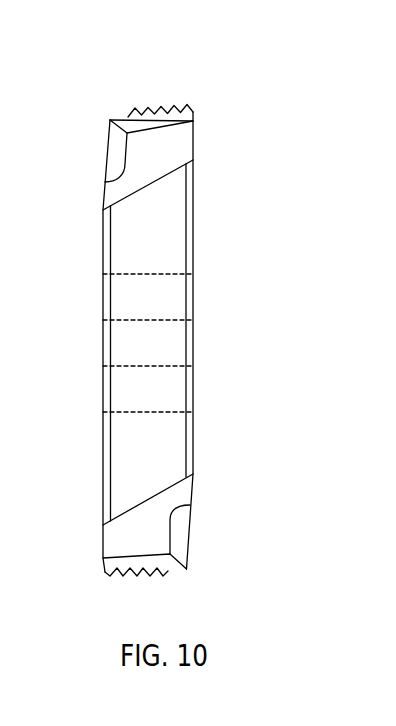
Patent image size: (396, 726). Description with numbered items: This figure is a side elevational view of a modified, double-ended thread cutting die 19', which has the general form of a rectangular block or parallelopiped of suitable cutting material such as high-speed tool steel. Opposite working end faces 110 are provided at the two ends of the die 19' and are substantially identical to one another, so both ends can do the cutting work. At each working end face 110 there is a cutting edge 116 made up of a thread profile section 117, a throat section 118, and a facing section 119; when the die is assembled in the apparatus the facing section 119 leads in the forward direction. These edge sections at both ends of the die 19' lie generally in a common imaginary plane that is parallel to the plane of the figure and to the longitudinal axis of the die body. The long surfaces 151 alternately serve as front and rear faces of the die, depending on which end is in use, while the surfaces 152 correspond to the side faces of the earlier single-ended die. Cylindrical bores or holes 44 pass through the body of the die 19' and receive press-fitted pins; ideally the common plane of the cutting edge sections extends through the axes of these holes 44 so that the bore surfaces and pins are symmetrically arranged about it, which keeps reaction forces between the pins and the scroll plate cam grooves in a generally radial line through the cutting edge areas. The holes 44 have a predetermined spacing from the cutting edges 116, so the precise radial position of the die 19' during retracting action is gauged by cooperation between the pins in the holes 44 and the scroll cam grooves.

The double-ended thread cutting die 19' is at (166, 327).
The working end face 110 is at (198, 120).
The cutting edge 116 is at (146, 102).
The thread profile section 117 is at (192, 100).
The throat section 118 is at (130, 106).
The facing section 119 is at (105, 122).
The surfaces serving as front and rear faces 151 is at (103, 257).
The surfaces corresponding to side faces 152 is at (165, 343).
The cylindrical bores 44 is at (165, 320).